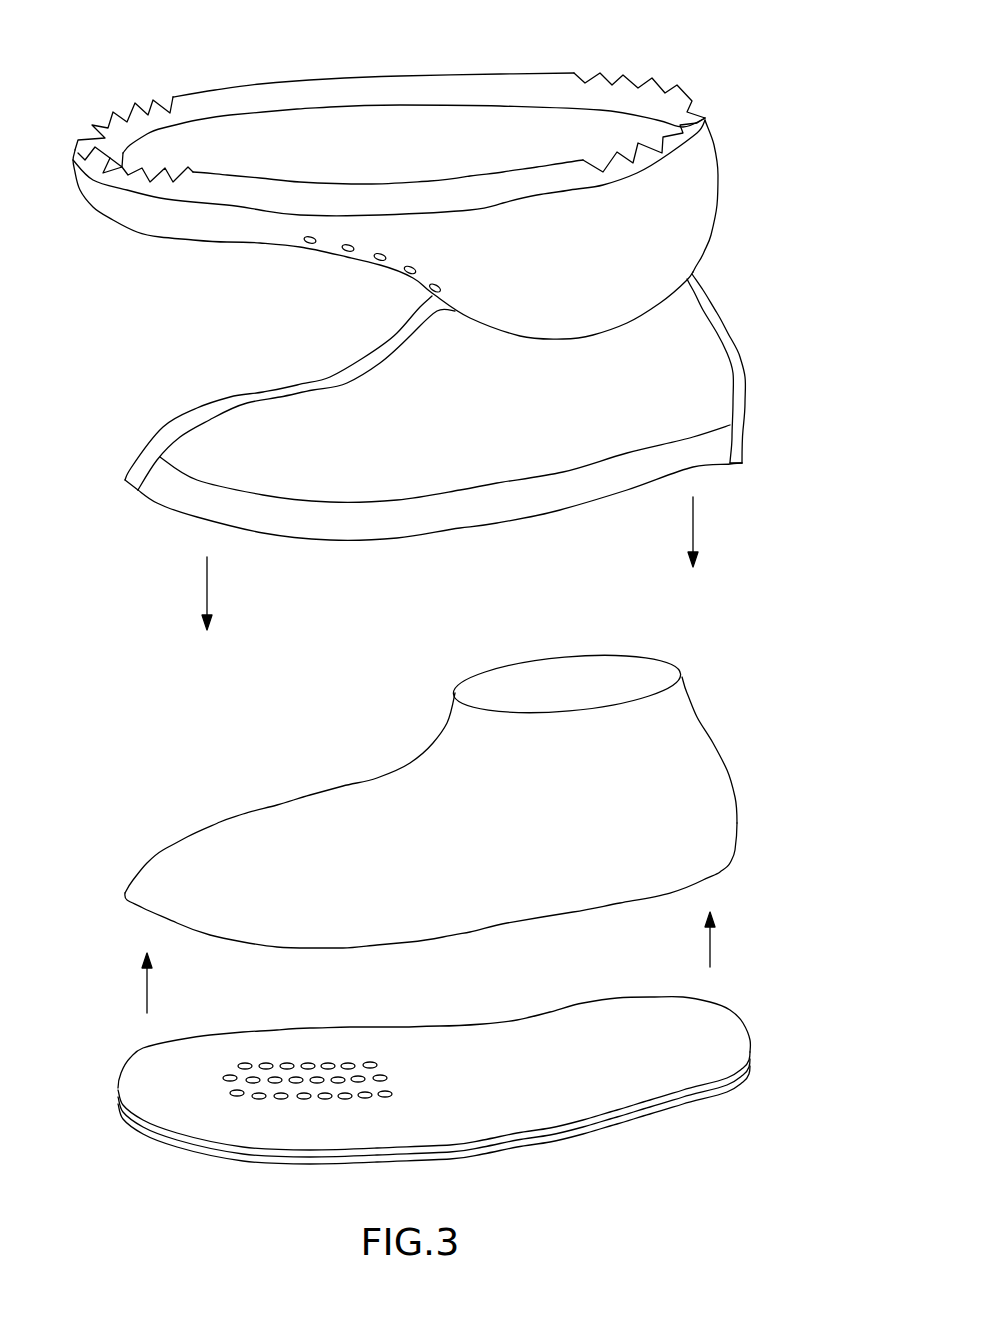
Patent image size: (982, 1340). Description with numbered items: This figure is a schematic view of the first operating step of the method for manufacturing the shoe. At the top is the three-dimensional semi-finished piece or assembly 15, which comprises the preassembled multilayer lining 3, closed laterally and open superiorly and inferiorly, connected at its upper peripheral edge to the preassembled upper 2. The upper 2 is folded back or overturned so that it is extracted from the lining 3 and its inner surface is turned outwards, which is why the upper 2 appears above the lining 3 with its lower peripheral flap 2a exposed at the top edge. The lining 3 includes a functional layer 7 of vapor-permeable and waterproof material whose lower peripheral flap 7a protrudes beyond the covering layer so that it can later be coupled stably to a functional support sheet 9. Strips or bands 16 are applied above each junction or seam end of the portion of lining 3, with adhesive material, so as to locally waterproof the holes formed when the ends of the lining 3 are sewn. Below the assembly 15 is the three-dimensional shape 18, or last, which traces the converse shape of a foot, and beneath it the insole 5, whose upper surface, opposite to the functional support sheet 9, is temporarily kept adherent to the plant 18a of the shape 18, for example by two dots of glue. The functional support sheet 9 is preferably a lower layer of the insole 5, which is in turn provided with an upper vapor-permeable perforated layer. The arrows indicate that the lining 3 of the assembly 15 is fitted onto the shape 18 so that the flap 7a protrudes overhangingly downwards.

The three-dimensional semi-finished piece or assembly 15 is at (432, 170).
The upper 2 is at (419, 170).
The lower peripheral flap of upper 2a is at (375, 87).
The multilayer lining 3 is at (424, 400).
The strips/bands 16 is at (710, 297).
The functional layer 7 is at (469, 464).
The lower peripheral flap of functional layer 7a is at (707, 463).
The three-dimensional shape (last) 18 is at (469, 797).
The plant of shape 18a is at (708, 884).
The insole 5 is at (464, 1059).
The functional support sheet 9 is at (707, 1090).